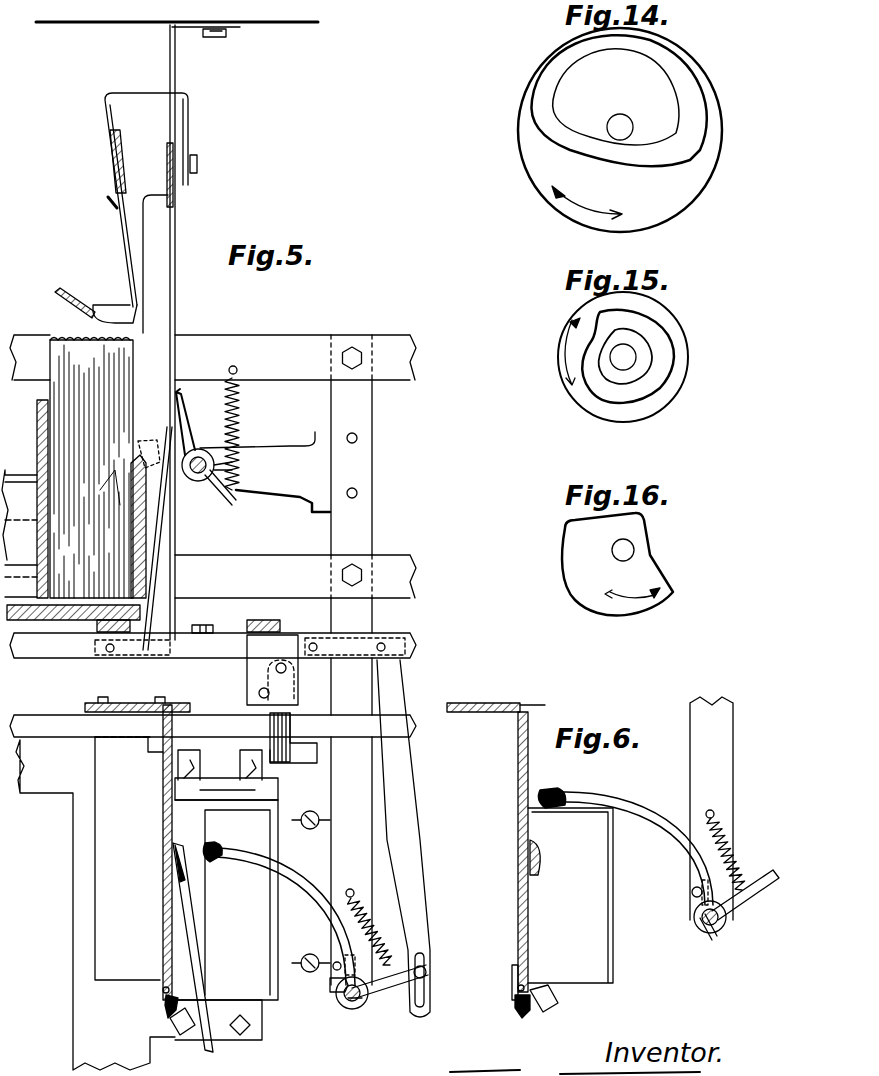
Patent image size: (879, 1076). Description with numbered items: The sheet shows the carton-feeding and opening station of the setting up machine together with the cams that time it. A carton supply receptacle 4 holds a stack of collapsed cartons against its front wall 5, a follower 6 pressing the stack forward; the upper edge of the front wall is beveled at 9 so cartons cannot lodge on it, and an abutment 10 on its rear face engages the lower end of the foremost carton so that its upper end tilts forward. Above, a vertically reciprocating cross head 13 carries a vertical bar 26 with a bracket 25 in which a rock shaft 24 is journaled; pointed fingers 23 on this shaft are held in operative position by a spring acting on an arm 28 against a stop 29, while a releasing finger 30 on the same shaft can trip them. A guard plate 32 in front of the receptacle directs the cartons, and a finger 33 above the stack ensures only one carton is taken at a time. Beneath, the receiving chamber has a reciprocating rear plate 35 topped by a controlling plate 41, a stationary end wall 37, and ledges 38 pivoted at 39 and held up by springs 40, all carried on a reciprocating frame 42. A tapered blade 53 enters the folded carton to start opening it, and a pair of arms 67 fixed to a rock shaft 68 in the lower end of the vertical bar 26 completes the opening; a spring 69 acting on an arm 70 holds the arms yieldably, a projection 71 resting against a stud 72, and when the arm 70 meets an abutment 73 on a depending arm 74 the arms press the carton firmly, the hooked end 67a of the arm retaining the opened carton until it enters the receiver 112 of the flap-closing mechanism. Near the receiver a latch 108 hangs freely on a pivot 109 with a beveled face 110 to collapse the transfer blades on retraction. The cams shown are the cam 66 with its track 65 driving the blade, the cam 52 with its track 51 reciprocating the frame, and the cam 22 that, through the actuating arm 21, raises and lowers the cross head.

In FIG. 5, the carton supply receptacle 4 is at (30, 470).
In FIG. 5, the front wall 5 is at (140, 524).
In FIG. 5, the follower 6 is at (37, 437).
In FIG. 5, the beveled upper edge 9 is at (140, 445).
In FIG. 5, the abutment 10 is at (140, 576).
In FIG. 5, the cross head 13 is at (255, 352).
In FIG. 5, the actuating arm 21 is at (247, 418).
In FIG. 16, the cam 22 is at (651, 565).
In FIG. 5, the fingers 23 is at (186, 398).
In FIG. 5, the rock shaft 24 is at (240, 476).
In FIG. 5, the bracket 25 is at (257, 428).
In FIG. 5, the vertical bar 26 is at (351, 682).
In FIG. 6, the vertical bar 26 is at (711, 808).
In FIG. 5, the arm 28 is at (232, 504).
In FIG. 5, the stop 29 is at (236, 450).
In FIG. 5, the releasing finger 30 is at (199, 446).
In FIG. 5, the guard plate 32 is at (176, 293).
In FIG. 5, the finger 33 is at (104, 307).
In FIG. 5, the rear plate 35 is at (164, 788).
In FIG. 6, the rear plate 35 is at (518, 860).
In FIG. 5, the end wall 37 is at (100, 883).
In FIG. 5, the ledges 38 is at (172, 1022).
In FIG. 6, the ledges 38 is at (552, 1005).
In FIG. 5, the pivot 39 is at (163, 990).
In FIG. 6, the pivot 39 is at (518, 989).
In FIG. 5, the springs 40 is at (163, 1000).
In FIG. 6, the springs 40 is at (518, 1010).
In FIG. 5, the controlling plate 41 is at (117, 704).
In FIG. 6, the controlling plate 41 is at (488, 704).
In FIG. 5, the frame 42 is at (213, 727).
In FIG. 15, the cam track 51 is at (660, 380).
In FIG. 15, the cam 52 is at (668, 345).
In FIG. 5, the blade 53 is at (172, 858).
In FIG. 6, the blade 53 is at (542, 858).
In FIG. 14, the cam track 65 is at (670, 140).
In FIG. 14, the cam 66 is at (620, 130).
In FIG. 5, the arms 67 is at (312, 870).
In FIG. 6, the arms 67 is at (648, 803).
In FIG. 5, the hook end 67a is at (215, 860).
In FIG. 6, the hook end 67a is at (548, 790).
In FIG. 5, the rock shaft 68 is at (345, 1008).
In FIG. 6, the rock shaft 68 is at (702, 930).
In FIG. 5, the spring 69 is at (380, 915).
In FIG. 6, the spring 69 is at (733, 850).
In FIG. 5, the arm 70 is at (385, 985).
In FIG. 6, the arm 70 is at (745, 900).
In FIG. 5, the projection 71 is at (335, 995).
In FIG. 6, the projection 71 is at (700, 900).
In FIG. 5, the stud 72 is at (333, 960).
In FIG. 6, the stud 72 is at (692, 892).
In FIG. 5, the abutment 73 is at (428, 972).
In FIG. 5, the depending arm 74 is at (430, 895).
In FIG. 5, the latch 108 is at (270, 727).
In FIG. 5, the pivot 109 is at (286, 668).
In FIG. 5, the beveled face 110 is at (282, 763).
In FIG. 5, the receiver 112 is at (226, 895).